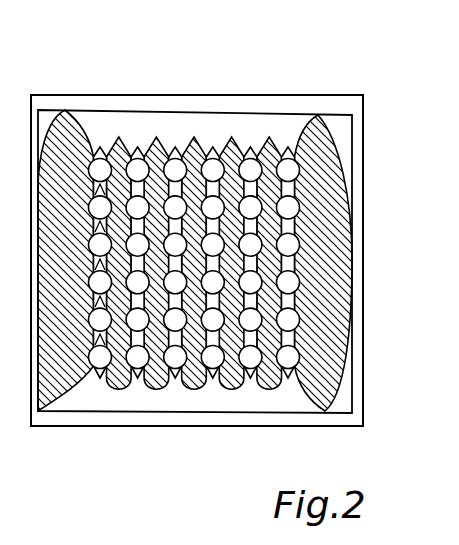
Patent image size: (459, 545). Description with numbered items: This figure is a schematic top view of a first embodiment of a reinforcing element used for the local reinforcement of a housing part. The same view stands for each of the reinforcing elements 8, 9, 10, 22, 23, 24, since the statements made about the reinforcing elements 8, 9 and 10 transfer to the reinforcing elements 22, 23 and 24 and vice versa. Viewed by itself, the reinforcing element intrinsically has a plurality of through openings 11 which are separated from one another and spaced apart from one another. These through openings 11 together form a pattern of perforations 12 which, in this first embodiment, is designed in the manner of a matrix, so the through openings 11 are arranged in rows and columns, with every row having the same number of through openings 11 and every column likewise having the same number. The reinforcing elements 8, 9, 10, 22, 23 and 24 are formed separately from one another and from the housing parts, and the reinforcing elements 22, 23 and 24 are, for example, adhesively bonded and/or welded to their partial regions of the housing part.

The reinforcing element 8 is at (174, 214).
The reinforcing element 9 is at (174, 214).
The reinforcing element 10 is at (174, 214).
The reinforcing element 22 is at (174, 214).
The reinforcing element 23 is at (174, 214).
The reinforcing element 24 is at (180, 131).
The through openings 11 is at (100, 358).
The pattern of perforations 12 is at (300, 155).